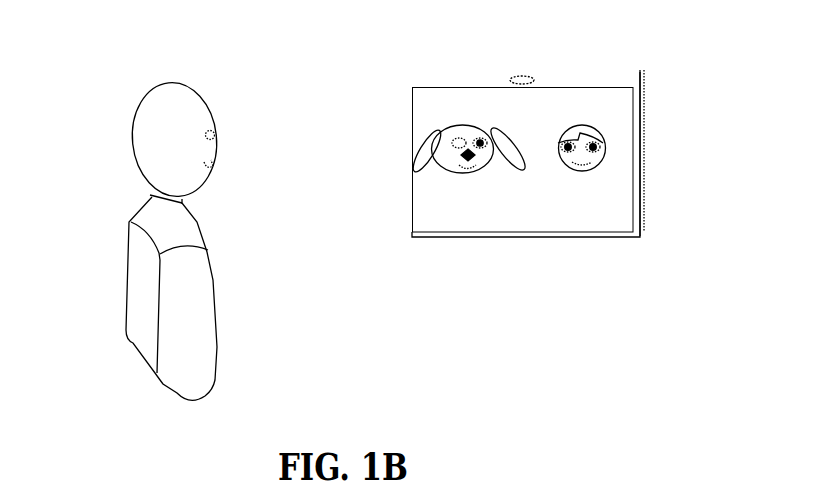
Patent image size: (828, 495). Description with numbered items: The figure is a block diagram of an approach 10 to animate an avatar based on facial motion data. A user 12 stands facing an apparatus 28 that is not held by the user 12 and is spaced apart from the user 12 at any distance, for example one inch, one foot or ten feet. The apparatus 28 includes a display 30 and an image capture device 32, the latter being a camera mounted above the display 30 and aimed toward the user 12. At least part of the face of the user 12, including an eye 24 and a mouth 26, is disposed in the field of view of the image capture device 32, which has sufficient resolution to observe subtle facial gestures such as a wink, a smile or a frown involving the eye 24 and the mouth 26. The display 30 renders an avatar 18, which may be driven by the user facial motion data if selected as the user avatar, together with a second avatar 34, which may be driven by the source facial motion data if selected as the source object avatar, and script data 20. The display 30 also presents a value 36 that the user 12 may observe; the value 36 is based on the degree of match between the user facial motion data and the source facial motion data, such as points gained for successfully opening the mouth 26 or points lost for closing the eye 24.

The approach to animate an avatar 10 is at (177, 221).
The user 12 is at (200, 135).
The avatar 18 is at (418, 152).
The script data 20 is at (529, 149).
The eye 24 is at (216, 135).
The mouth 26 is at (211, 163).
The apparatus 28 is at (643, 70).
The display 30 is at (636, 103).
The image capture device 32 is at (527, 77).
The avatar 34 is at (606, 150).
The value 36 is at (425, 215).